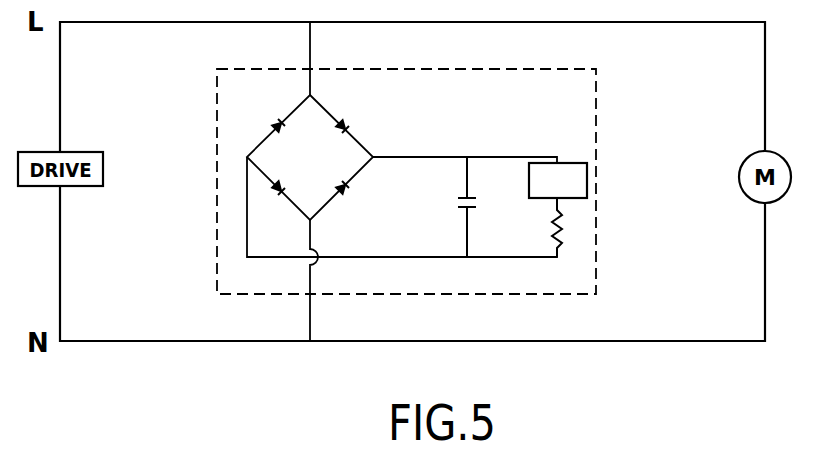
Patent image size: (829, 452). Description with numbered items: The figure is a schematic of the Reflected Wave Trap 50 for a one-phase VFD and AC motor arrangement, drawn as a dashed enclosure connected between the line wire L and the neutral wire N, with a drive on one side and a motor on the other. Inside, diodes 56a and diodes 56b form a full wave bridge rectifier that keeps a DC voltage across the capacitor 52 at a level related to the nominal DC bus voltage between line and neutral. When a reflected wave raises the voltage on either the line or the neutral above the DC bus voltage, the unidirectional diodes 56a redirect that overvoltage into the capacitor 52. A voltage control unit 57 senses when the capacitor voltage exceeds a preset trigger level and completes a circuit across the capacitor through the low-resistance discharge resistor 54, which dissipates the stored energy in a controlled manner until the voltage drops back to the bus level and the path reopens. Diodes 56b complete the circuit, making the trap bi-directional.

The Reflected Wave Trap 50 is at (600, 118).
The capacitor 52 is at (468, 178).
The discharge resistor 54 is at (560, 228).
The diodes 56a is at (346, 126).
The diodes 56b is at (276, 124).
The voltage control unit 57 is at (587, 180).